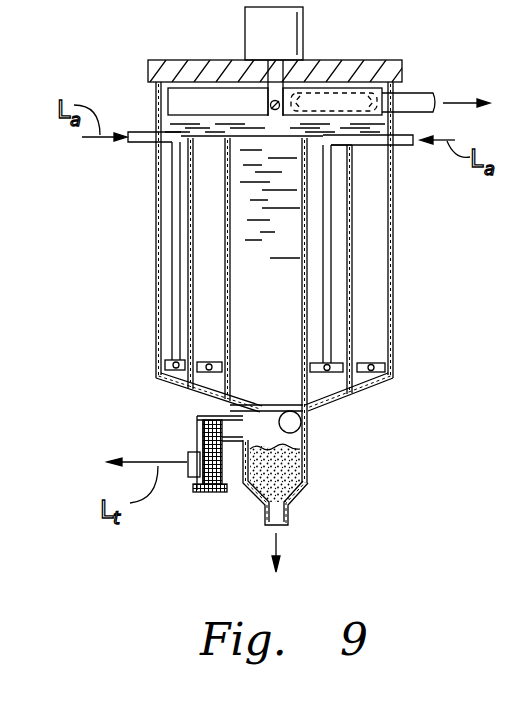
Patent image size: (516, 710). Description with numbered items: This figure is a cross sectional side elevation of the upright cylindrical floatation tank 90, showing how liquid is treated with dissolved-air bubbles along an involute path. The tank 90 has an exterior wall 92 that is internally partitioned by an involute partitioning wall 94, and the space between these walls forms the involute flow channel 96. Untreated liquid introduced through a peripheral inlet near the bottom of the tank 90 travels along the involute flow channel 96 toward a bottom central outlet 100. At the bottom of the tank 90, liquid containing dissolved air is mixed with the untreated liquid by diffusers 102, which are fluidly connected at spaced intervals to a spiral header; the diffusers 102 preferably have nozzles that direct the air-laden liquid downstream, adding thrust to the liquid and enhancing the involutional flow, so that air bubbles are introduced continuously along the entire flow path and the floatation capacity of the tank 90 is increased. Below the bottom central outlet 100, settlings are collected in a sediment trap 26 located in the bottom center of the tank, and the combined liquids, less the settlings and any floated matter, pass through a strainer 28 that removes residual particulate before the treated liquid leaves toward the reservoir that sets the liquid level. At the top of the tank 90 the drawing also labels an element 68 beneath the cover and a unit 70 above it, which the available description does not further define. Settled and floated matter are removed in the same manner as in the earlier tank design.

The sediment trap 26 is at (312, 470).
The strainer 28 is at (198, 443).
The heating chamber 68 is at (188, 95).
The drive motor 70 is at (291, 47).
The floatation tank 90 is at (155, 250).
The exterior wall 92 is at (157, 305).
The involute partitioning wall 94 is at (188, 330).
The involute flow channel 96 is at (373, 243).
The bottom central outlet 100 is at (304, 423).
The diffusers 102 is at (377, 361).